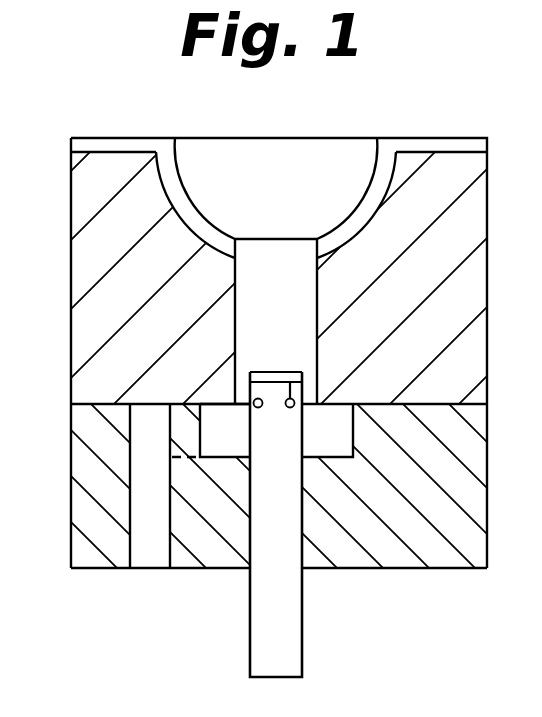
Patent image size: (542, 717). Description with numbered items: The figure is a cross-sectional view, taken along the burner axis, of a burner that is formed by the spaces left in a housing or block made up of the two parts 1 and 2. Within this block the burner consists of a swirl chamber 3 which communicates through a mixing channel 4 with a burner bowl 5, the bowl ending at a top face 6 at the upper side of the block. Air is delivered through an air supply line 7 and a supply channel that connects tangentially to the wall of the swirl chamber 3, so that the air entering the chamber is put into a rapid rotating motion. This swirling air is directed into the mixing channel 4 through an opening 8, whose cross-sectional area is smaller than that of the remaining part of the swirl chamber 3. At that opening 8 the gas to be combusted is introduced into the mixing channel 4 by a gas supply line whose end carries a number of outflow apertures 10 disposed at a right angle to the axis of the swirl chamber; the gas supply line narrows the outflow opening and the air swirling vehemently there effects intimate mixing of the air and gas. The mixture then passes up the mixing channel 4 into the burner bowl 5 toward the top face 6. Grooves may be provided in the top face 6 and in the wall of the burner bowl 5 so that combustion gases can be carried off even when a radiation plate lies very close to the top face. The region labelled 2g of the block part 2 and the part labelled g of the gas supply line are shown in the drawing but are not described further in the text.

The housing part 1 is at (403, 287).
The housing part 2 is at (404, 494).
The top plate 2g is at (115, 141).
The swirl chamber 3 is at (223, 435).
The mixing channel 4 is at (266, 284).
The burner bowl 5 is at (266, 192).
The top face 6 is at (449, 138).
The air supply line 7 is at (150, 553).
The opening 8 is at (247, 407).
The outflow apertures 10 is at (290, 378).
The shaft g is at (302, 640).